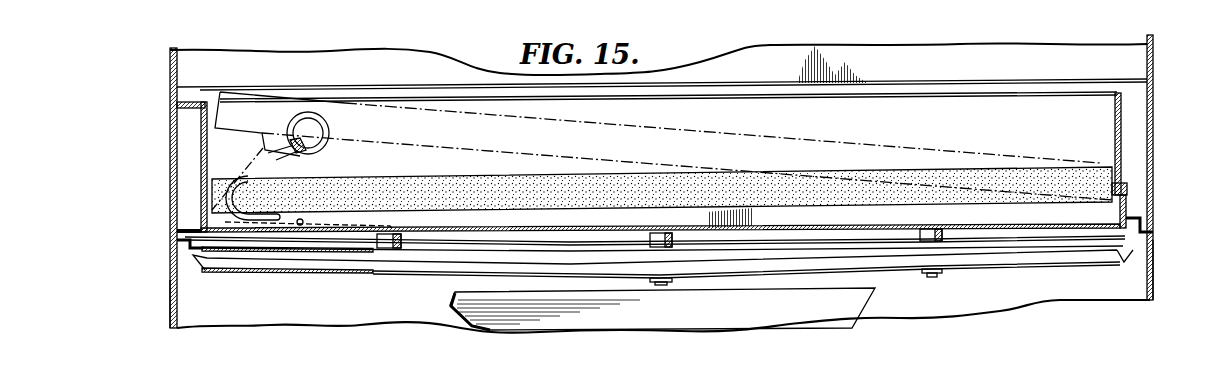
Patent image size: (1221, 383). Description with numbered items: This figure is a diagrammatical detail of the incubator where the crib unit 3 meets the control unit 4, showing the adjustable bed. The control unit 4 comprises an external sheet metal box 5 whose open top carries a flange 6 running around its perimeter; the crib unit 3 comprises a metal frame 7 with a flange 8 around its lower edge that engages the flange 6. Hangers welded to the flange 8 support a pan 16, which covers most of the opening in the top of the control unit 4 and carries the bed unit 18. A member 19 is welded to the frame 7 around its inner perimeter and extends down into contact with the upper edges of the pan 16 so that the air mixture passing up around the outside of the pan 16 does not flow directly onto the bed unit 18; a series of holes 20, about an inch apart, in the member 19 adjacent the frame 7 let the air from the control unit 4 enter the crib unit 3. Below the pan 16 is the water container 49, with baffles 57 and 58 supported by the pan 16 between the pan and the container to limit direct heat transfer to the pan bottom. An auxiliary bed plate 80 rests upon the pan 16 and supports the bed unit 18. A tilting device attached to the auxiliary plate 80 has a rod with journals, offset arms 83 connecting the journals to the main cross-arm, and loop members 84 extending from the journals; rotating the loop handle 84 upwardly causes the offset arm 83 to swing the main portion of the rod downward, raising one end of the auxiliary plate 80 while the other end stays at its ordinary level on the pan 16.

The crib unit 3 is at (1156, 123).
The control unit 4 is at (1156, 280).
The external sheet metal box 5 is at (170, 302).
The flange 6 is at (174, 243).
The metal frame 7 is at (168, 127).
The flange 8 is at (183, 225).
The pan 16 is at (303, 231).
The bed unit 18 is at (910, 151).
The member 19 is at (173, 153).
The holes 20 is at (189, 101).
The water container 49 is at (471, 331).
The baffle 57 is at (200, 258).
The baffle 58 is at (258, 272).
The auxiliary bed plate 80 is at (453, 220).
The offset arm 83 is at (260, 164).
The loop member 84 is at (330, 123).